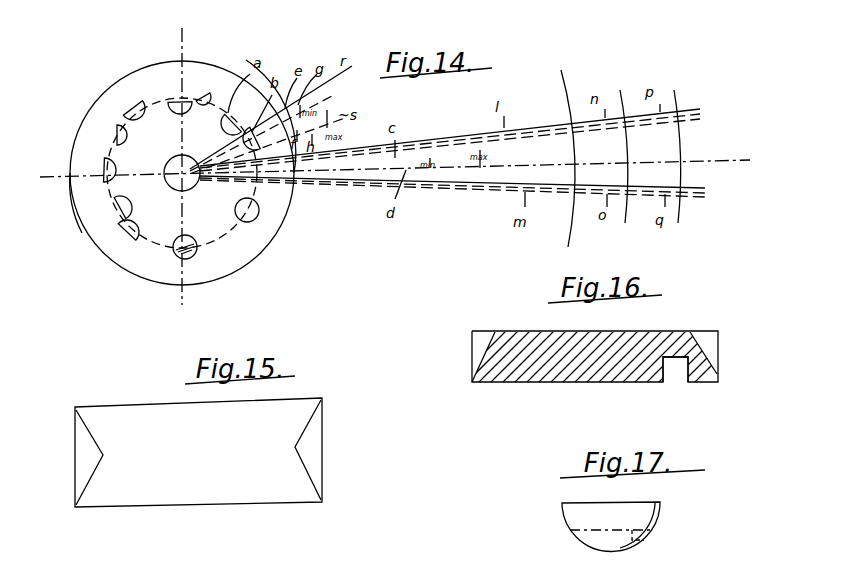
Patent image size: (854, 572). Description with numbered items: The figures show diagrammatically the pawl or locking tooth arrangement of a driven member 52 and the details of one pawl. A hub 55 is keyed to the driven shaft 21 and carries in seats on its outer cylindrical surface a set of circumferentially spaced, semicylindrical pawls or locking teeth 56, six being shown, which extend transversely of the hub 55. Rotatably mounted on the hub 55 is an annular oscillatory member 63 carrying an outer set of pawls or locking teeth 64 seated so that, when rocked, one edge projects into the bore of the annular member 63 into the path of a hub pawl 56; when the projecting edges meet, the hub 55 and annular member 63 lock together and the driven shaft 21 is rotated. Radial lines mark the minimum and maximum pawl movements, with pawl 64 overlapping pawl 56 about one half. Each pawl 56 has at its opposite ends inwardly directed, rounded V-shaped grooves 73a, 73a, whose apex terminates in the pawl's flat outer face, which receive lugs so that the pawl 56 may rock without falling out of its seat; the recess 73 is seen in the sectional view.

In FIG. 14, the driven shaft 21 is at (177, 183).
In FIG. 14, the driven member 52 is at (108, 268).
In FIG. 14, the hub 55 is at (120, 188).
In FIG. 14, the pawl or locking tooth 56 is at (128, 137).
In FIG. 15, the pawl or locking tooth 56 is at (198, 452).
In FIG. 16, the pawl or locking tooth 56 is at (588, 370).
In FIG. 17, the pawl or locking tooth 56 is at (560, 512).
In FIG. 14, the annular oscillatory member 63 is at (241, 255).
In FIG. 14, the pawl or locking tooth 64 is at (128, 106).
In FIG. 16, the notch 73 is at (678, 366).
In FIG. 17, the notch 73 is at (639, 537).
In FIG. 15, the V-shaped groove 73a is at (95, 455).
In FIG. 16, the V-shaped groove 73a is at (475, 340).
In FIG. 17, the V-shaped groove 73a is at (638, 513).